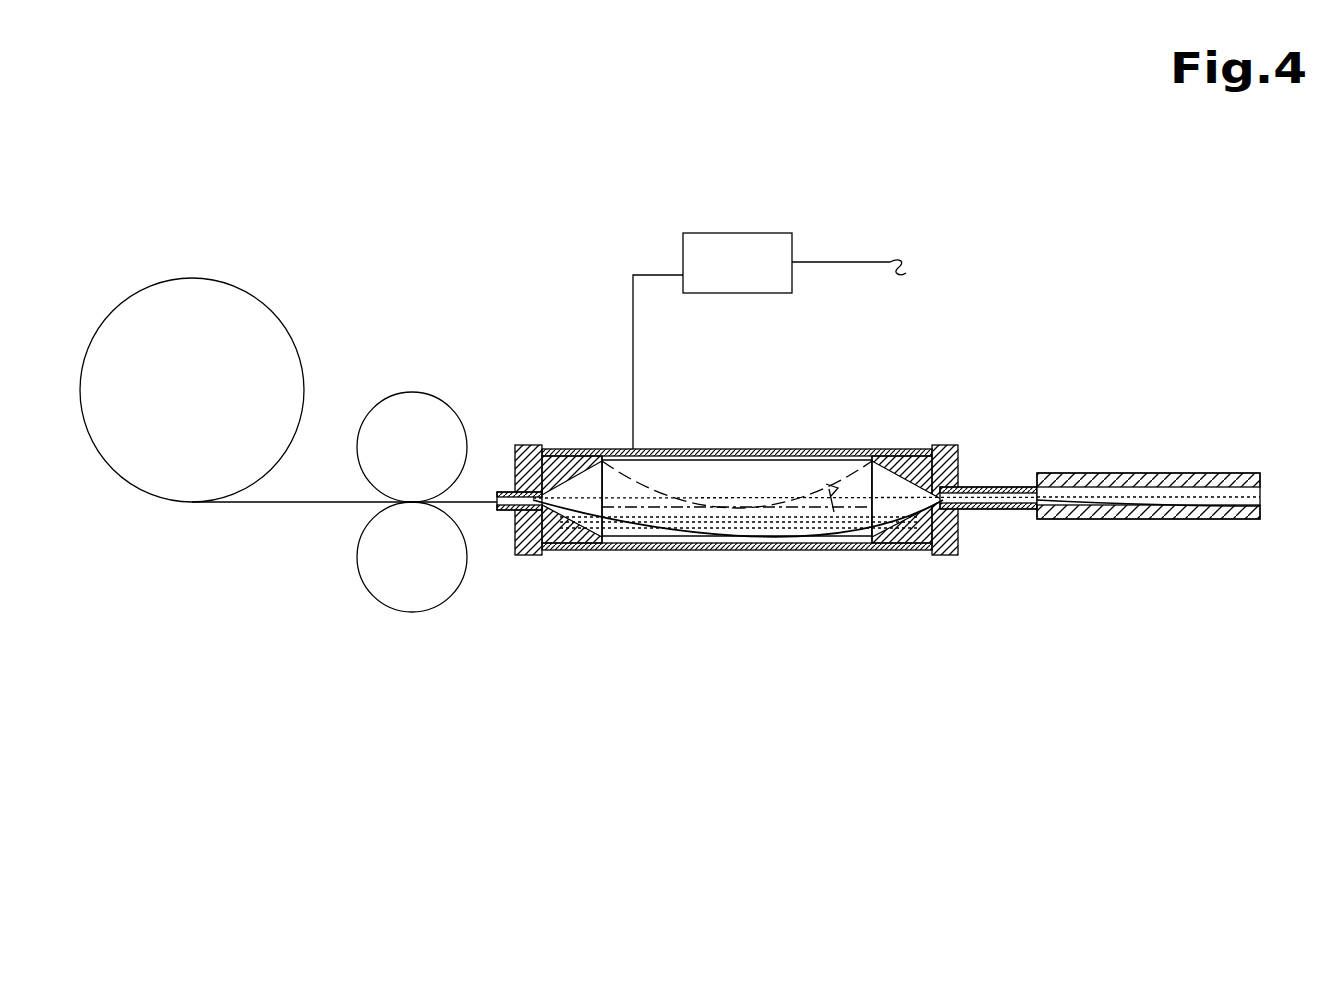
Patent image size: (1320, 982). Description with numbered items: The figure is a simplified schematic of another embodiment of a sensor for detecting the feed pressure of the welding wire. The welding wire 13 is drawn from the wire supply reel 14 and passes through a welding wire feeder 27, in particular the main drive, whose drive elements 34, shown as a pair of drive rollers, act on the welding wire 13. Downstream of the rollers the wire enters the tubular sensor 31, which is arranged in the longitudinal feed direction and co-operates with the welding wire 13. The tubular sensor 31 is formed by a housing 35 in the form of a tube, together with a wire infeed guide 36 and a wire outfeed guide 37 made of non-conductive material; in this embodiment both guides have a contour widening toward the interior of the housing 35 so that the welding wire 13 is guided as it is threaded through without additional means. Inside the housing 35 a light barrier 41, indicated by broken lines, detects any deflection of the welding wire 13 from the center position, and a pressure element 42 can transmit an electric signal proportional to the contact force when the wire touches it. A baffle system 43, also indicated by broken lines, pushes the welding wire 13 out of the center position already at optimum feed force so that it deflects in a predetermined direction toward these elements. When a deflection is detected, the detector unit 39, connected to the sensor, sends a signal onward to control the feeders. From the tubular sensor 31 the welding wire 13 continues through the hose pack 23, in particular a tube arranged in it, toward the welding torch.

The welding wire 13 is at (295, 503).
The wire supply reel 14 is at (206, 313).
The hose pack 23 is at (1172, 451).
The welding wire feeder 27 is at (404, 447).
The tubular sensor 31 is at (853, 555).
The drive elements 34 is at (413, 420).
The housing 35 is at (796, 451).
The wire infeed guide 36 is at (498, 540).
The wire outfeed guide 37 is at (978, 466).
The detector unit 39 is at (735, 262).
The light barrier 41 is at (612, 543).
The pressure element 42 is at (660, 549).
The baffle system 43 is at (842, 549).